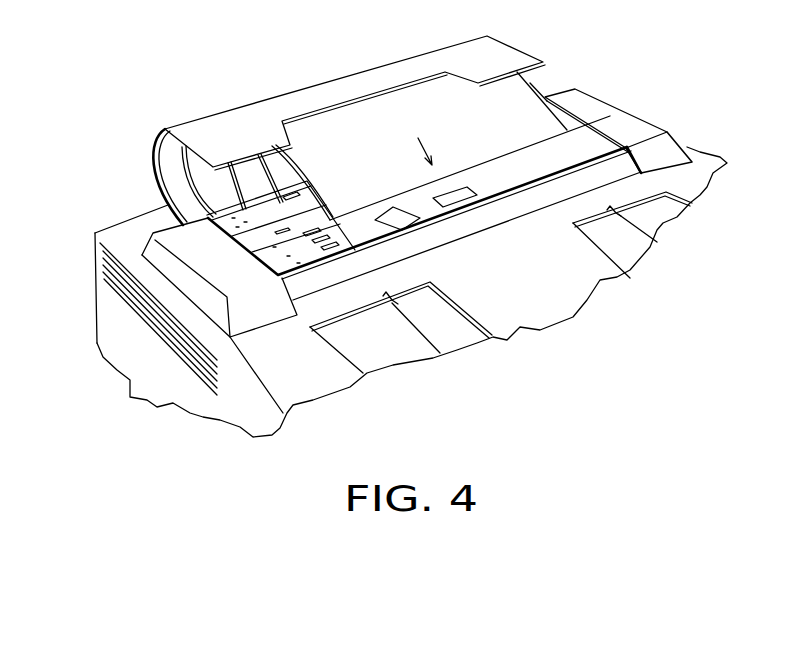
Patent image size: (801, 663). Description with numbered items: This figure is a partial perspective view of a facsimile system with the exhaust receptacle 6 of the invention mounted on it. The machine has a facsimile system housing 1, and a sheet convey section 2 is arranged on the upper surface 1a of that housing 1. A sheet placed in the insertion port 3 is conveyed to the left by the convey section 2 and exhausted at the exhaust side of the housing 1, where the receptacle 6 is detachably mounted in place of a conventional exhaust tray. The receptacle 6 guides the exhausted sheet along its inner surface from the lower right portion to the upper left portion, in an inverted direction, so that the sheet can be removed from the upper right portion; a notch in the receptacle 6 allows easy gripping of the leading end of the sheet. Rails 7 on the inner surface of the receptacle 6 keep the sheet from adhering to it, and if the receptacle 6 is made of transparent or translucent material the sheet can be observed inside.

The facsimile system housing 1 is at (707, 185).
The upper surface 1a is at (525, 325).
The sheet convey section 2 is at (617, 103).
The insertion port 3 is at (515, 257).
The exhaust receptacle 6 is at (230, 118).
The paper guide 7 is at (187, 178).